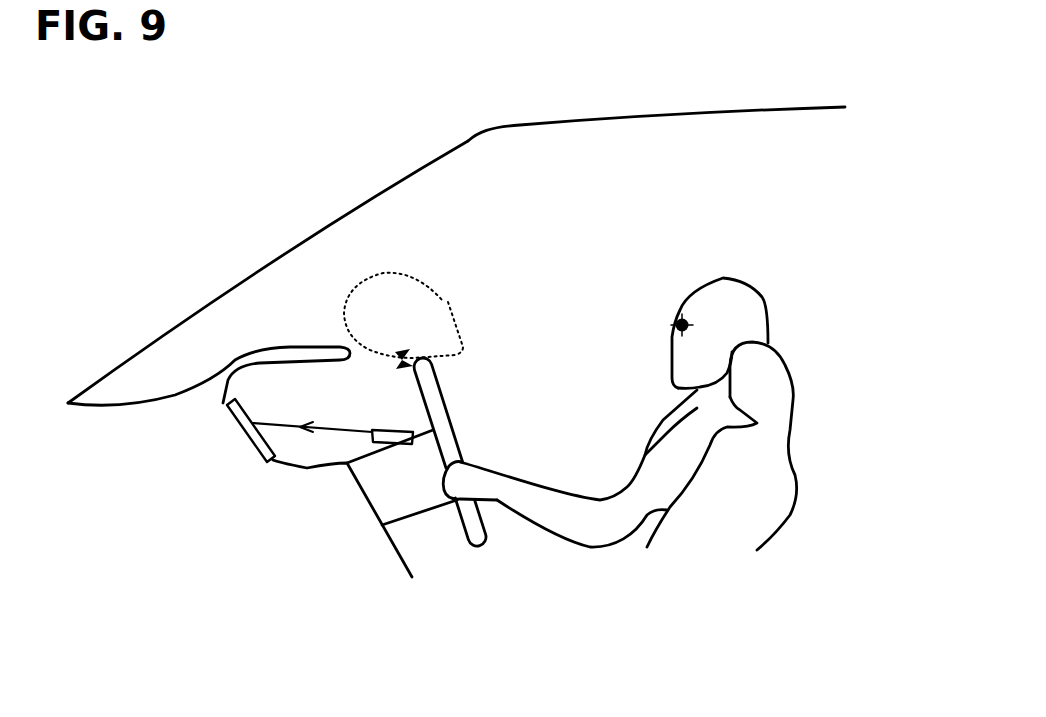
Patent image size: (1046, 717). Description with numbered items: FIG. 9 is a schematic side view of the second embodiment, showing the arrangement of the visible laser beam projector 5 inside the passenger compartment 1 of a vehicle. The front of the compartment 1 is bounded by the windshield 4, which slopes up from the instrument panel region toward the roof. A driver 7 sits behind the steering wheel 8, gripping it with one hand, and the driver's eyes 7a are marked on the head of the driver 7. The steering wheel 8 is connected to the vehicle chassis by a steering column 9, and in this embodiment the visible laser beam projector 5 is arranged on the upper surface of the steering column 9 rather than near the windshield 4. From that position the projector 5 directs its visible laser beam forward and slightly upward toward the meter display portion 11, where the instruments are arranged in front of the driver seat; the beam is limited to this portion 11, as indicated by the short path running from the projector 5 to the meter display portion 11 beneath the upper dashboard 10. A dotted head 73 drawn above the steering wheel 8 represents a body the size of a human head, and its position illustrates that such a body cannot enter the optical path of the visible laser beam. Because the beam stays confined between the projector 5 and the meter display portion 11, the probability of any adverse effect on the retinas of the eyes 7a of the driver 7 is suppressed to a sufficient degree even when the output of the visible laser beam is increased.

The passenger compartment 1 is at (570, 153).
The windshield 4 is at (427, 163).
The visible laser beam projector 5 is at (387, 428).
The driver 7 is at (732, 280).
The human eyes 7a is at (672, 323).
The steering wheel 8 is at (440, 385).
The steering column 9 is at (407, 488).
The instrument panel 10 is at (292, 347).
The meter display portion 11 is at (242, 433).
The head 73 is at (450, 300).